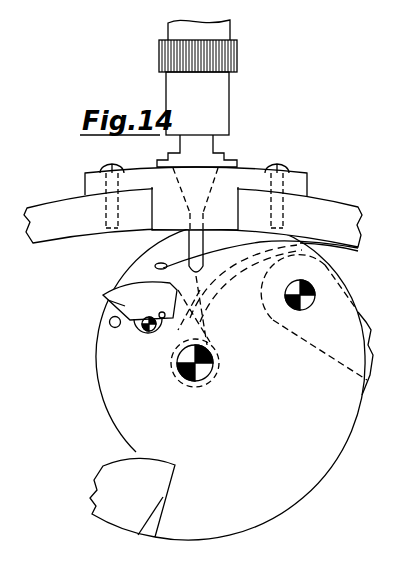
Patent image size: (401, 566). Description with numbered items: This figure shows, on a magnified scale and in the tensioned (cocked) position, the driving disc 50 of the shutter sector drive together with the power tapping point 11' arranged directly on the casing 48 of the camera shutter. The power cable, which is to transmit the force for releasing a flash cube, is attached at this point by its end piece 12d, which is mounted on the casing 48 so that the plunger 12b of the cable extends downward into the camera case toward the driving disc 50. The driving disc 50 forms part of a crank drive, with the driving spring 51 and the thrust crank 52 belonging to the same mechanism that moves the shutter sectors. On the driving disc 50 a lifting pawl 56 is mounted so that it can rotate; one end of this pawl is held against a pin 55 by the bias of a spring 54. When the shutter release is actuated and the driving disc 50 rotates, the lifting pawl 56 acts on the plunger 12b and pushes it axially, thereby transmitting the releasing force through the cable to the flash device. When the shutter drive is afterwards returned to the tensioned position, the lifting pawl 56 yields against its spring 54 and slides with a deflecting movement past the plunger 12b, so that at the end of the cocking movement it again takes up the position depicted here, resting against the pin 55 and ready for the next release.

The end piece 12d is at (222, 91).
The power tapping point 11' is at (196, 173).
The casing 48 is at (338, 212).
The plunger 12b is at (188, 252).
The driving spring 51 is at (332, 243).
The thrust crank 52 is at (362, 333).
The lifting pawl 56 is at (110, 303).
The pin 55 is at (110, 326).
The spring 54 is at (128, 328).
The driving disc 50 is at (117, 369).